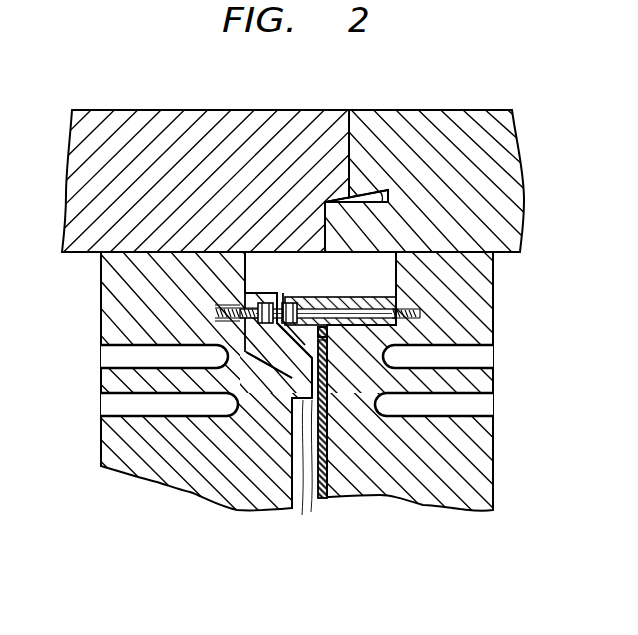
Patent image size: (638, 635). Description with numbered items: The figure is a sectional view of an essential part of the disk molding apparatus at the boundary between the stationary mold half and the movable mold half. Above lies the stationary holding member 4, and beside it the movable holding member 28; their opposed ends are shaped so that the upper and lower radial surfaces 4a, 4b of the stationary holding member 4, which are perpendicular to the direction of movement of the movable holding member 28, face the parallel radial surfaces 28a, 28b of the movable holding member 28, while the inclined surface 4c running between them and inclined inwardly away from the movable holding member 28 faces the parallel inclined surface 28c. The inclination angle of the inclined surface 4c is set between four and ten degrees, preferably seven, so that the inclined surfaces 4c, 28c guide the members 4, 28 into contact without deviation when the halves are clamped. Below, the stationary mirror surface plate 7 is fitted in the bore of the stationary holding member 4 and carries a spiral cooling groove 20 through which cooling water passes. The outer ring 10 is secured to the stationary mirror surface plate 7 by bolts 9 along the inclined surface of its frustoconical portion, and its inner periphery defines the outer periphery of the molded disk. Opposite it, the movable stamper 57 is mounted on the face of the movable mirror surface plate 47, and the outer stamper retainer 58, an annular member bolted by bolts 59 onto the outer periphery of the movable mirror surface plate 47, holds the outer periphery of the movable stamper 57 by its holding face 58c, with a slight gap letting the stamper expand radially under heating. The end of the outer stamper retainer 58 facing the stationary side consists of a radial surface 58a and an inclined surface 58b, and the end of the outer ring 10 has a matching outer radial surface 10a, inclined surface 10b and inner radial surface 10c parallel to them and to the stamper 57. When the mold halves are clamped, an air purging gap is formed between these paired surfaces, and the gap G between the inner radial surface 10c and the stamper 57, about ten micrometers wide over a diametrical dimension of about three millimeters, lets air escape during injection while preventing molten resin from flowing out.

The stationary holding member 4 is at (200, 110).
The movable holding member 28 is at (447, 110).
The upper radial surface 4a is at (349, 115).
The upper radial surface 28a is at (349, 115).
The lower radial surface 4b is at (322, 205).
The lower radial surface 28b is at (322, 205).
The inclined surface 4c is at (347, 195).
The inclined surface 28c is at (347, 195).
The stationary mirror surface plate 7 is at (167, 490).
The movable mirror surface plate 47 is at (452, 508).
The spiral cooling groove 20 is at (100, 404).
The bolt 9 is at (240, 317).
The outer ring 10 is at (262, 350).
The outer radial surface 10a is at (250, 294).
The inclined surface 10b is at (290, 381).
The inner radial surface 10c is at (292, 506).
The gap G is at (305, 506).
The movable stamper 57 is at (322, 500).
The outer stamper retainer 58 is at (378, 300).
The radial surface 58a is at (280, 298).
The inclined surface 58b is at (320, 383).
The holding face 58c is at (330, 335).
The bolt 59 is at (342, 312).